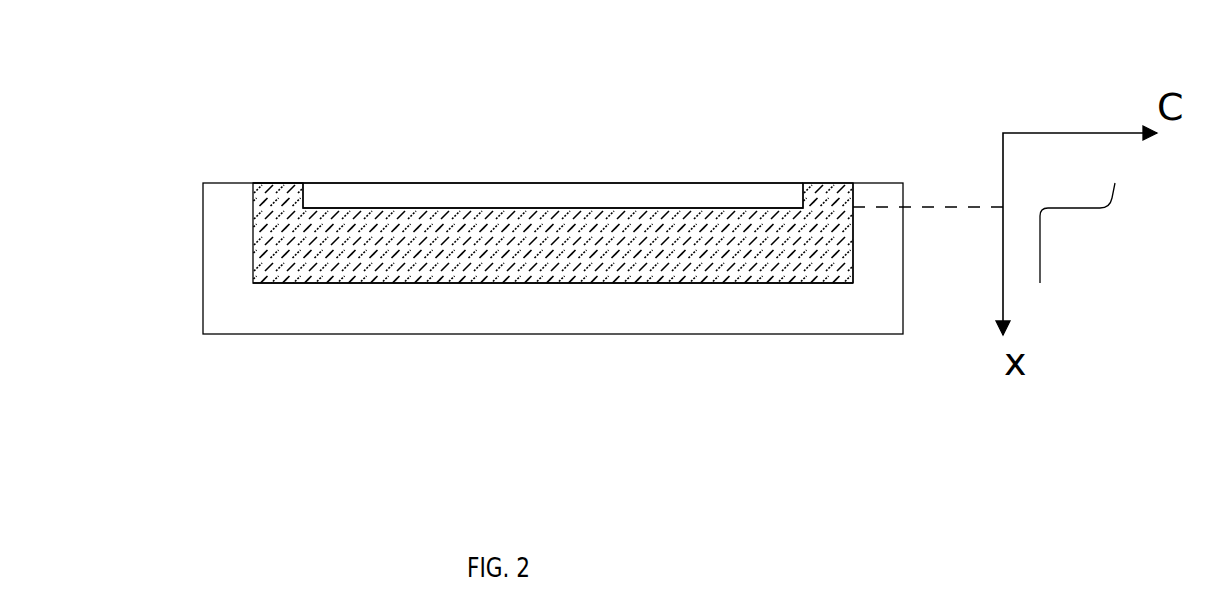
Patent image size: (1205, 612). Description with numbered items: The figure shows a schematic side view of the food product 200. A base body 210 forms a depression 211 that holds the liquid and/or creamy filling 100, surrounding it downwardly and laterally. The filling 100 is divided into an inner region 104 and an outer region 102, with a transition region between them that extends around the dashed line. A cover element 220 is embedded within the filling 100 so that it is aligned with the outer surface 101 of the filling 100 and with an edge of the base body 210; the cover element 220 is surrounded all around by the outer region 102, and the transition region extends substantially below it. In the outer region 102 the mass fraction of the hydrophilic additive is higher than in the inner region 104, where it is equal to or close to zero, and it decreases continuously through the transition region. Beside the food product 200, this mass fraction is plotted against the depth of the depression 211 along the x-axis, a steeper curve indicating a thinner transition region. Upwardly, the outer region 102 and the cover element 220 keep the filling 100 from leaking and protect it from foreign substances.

The filling 100 is at (270, 182).
The outer surface of the filling 101 is at (288, 183).
The outer region 102 is at (253, 188).
The inner region 104 is at (253, 268).
The food product 200 is at (530, 285).
The base body 210 is at (428, 334).
The depression 211 is at (852, 235).
The cover element 220 is at (603, 183).